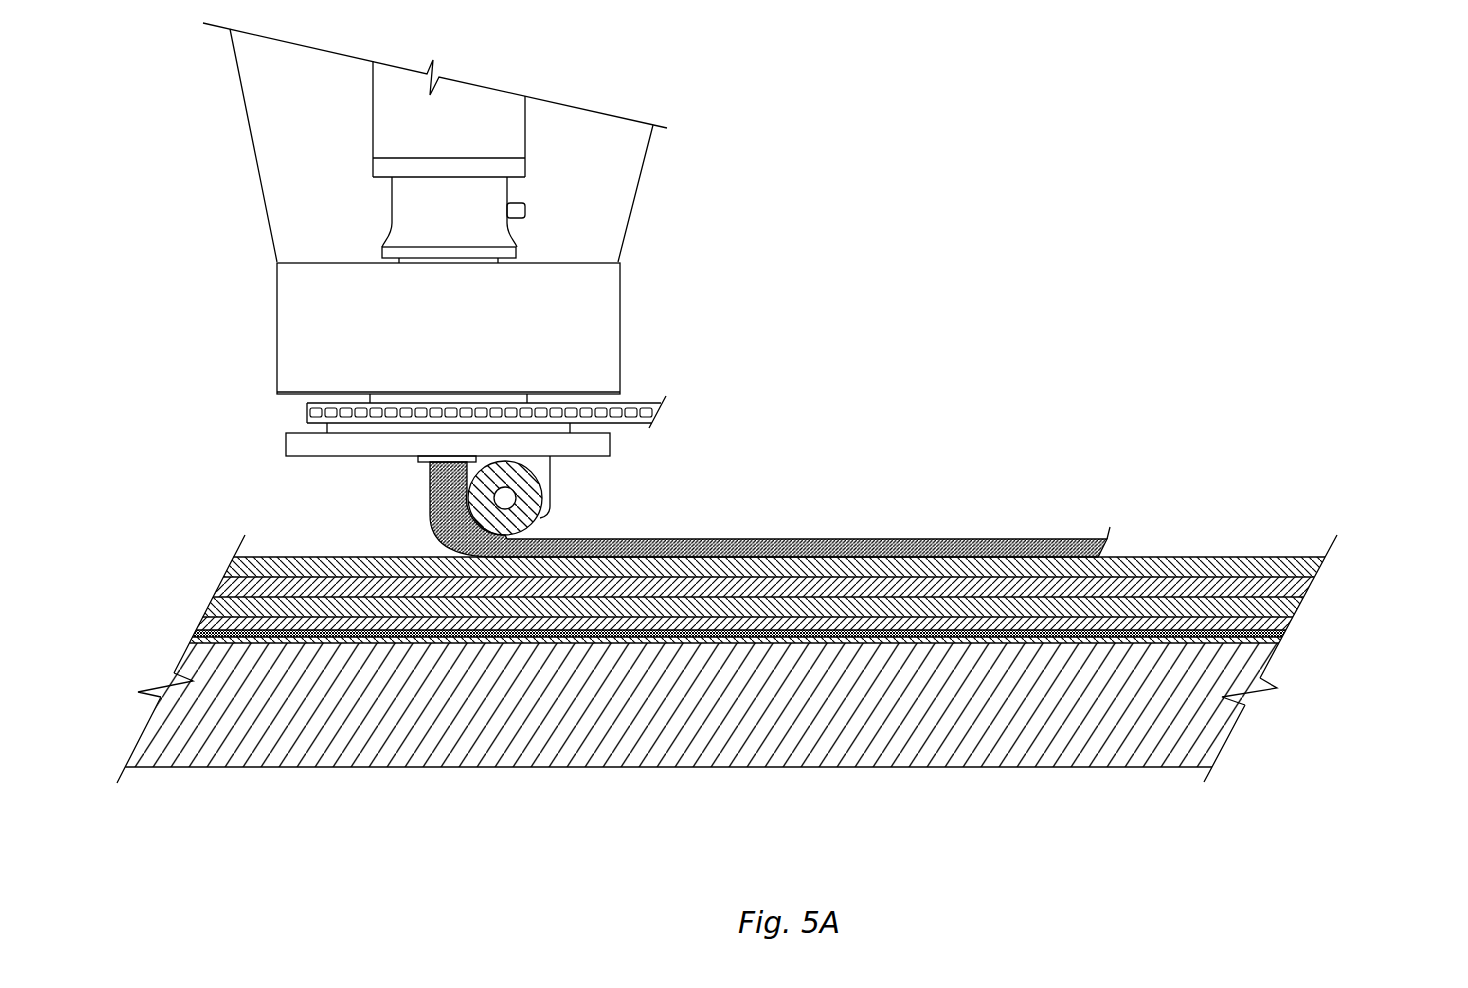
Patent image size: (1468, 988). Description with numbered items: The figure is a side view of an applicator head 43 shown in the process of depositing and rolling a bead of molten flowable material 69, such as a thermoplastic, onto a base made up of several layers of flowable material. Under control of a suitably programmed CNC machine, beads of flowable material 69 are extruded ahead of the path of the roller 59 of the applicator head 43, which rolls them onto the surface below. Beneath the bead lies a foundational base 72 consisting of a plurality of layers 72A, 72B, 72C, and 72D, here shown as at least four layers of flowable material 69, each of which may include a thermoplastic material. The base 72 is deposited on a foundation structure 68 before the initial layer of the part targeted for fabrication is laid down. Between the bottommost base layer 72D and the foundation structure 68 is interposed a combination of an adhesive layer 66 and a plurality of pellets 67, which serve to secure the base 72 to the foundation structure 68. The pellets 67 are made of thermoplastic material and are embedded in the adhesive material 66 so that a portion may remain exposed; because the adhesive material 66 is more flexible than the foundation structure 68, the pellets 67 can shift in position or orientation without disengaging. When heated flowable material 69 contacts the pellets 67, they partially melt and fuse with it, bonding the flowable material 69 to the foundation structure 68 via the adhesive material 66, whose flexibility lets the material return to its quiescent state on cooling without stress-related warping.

The applicator head 43 is at (660, 260).
The roller 59 is at (537, 486).
The adhesive material 66 is at (1280, 643).
The pellets 67 is at (383, 630).
The foundation structure 68 is at (310, 753).
The flowable material 69 is at (735, 539).
The foundational base 72 is at (769, 583).
The layer 72A is at (230, 568).
The layer 72B is at (223, 584).
The layer 72C is at (215, 606).
The bottommost base layer 72D is at (205, 621).